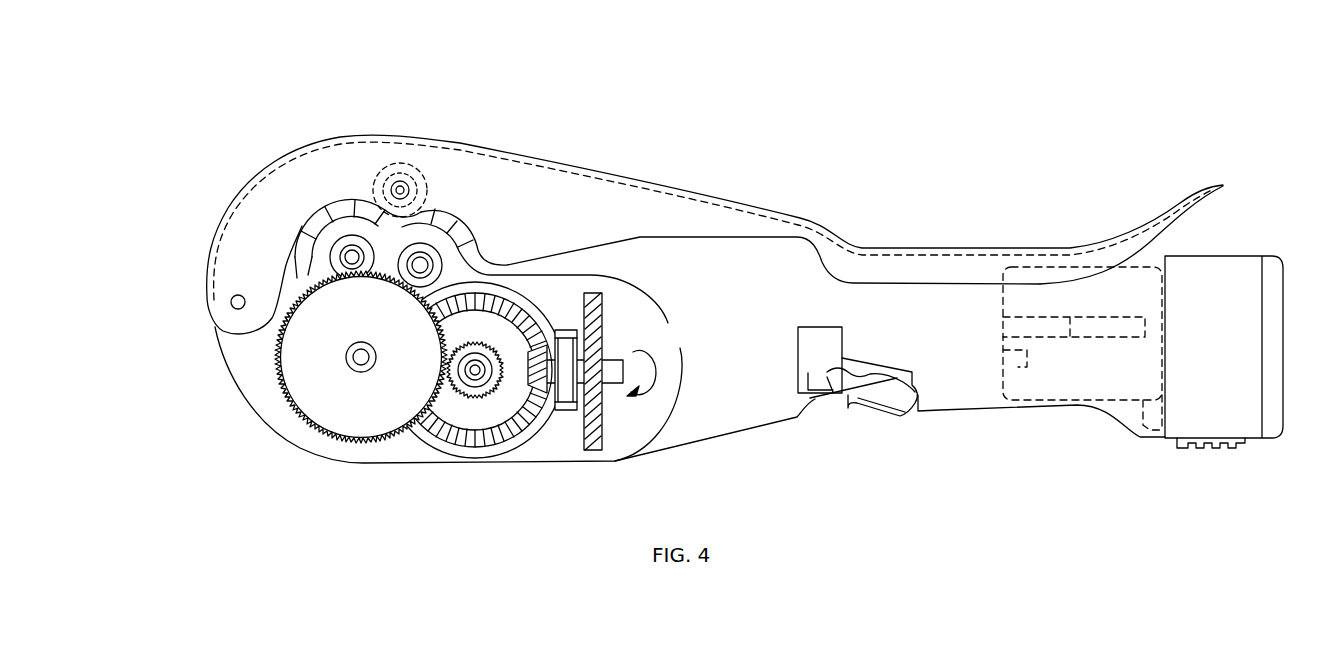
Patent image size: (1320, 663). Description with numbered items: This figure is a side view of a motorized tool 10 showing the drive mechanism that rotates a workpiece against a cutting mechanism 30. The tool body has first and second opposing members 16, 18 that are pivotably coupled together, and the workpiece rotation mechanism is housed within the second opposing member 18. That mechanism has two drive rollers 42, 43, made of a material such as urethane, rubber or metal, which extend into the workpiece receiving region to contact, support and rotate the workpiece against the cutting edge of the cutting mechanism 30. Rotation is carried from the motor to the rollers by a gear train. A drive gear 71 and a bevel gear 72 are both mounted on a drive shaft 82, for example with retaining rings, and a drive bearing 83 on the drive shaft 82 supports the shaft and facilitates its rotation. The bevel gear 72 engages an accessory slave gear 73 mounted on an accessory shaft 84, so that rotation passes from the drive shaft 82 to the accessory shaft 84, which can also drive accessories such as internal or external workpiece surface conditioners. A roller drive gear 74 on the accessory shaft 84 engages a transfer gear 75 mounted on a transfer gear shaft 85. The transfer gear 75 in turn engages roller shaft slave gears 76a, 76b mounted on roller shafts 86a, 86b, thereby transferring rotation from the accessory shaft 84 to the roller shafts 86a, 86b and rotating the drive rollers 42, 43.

The motorized tool 10 is at (988, 55).
The first opposing member 16 is at (762, 228).
The second opposing member 18 is at (773, 413).
The cutting mechanism 30 is at (413, 162).
The drive roller 42 is at (327, 222).
The drive roller 43 is at (480, 238).
The drive gear 71 is at (595, 450).
The bevel gear 72 is at (545, 392).
The accessory slave gear 73 is at (492, 440).
The roller drive gear 74 is at (470, 398).
The transfer gear 75 is at (360, 422).
The roller shaft slave gear 76a is at (297, 276).
The roller shaft slave gear 76b is at (448, 221).
The drive shaft 82 is at (612, 358).
The drive bearing 83 is at (568, 328).
The accessory shaft 84 is at (477, 370).
The transfer gear shaft 85 is at (353, 357).
The roller shaft 86a is at (348, 255).
The roller shaft 86b is at (427, 253).